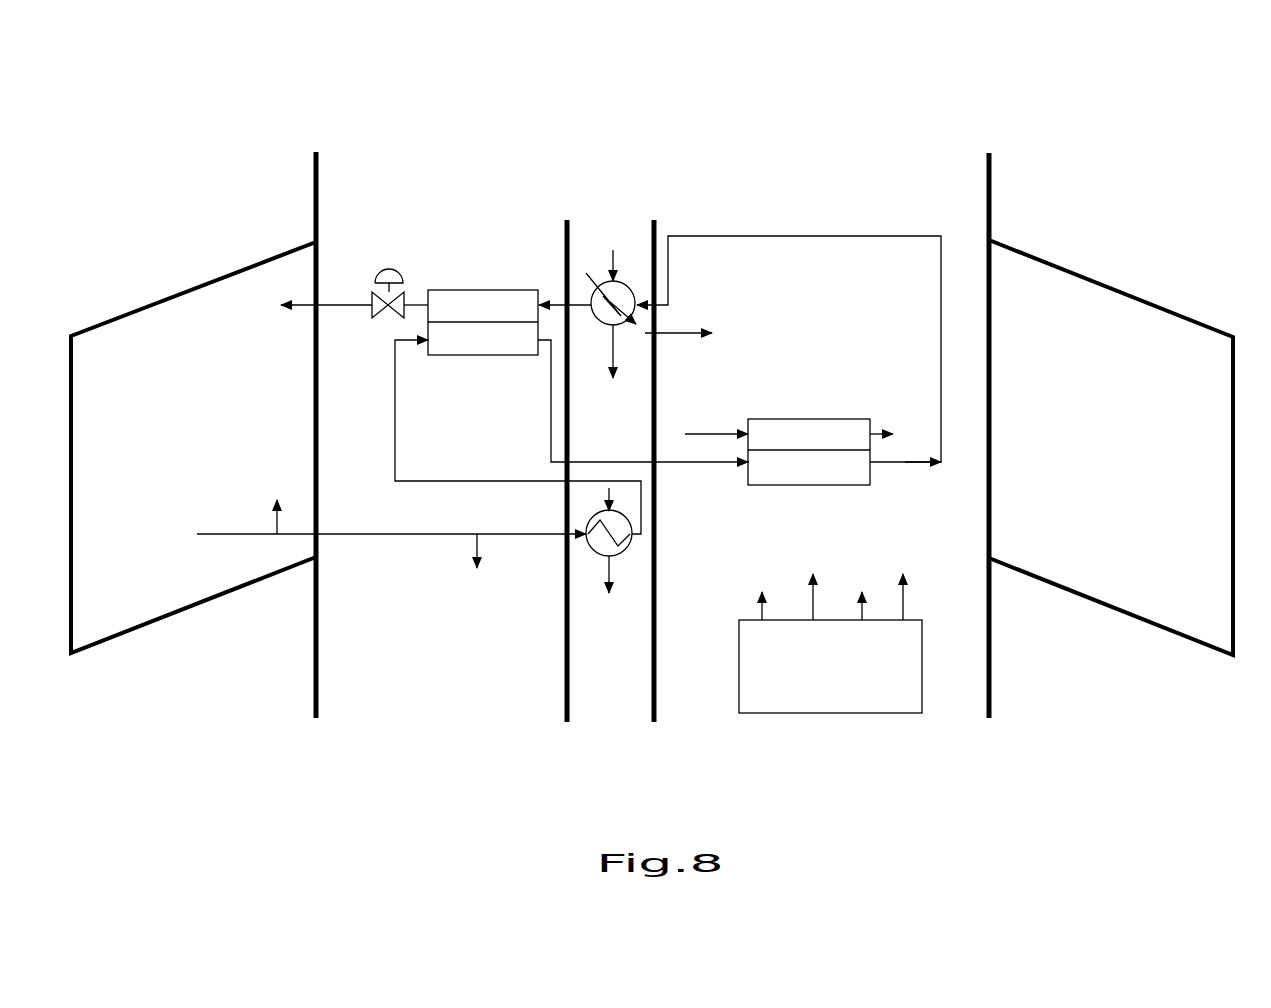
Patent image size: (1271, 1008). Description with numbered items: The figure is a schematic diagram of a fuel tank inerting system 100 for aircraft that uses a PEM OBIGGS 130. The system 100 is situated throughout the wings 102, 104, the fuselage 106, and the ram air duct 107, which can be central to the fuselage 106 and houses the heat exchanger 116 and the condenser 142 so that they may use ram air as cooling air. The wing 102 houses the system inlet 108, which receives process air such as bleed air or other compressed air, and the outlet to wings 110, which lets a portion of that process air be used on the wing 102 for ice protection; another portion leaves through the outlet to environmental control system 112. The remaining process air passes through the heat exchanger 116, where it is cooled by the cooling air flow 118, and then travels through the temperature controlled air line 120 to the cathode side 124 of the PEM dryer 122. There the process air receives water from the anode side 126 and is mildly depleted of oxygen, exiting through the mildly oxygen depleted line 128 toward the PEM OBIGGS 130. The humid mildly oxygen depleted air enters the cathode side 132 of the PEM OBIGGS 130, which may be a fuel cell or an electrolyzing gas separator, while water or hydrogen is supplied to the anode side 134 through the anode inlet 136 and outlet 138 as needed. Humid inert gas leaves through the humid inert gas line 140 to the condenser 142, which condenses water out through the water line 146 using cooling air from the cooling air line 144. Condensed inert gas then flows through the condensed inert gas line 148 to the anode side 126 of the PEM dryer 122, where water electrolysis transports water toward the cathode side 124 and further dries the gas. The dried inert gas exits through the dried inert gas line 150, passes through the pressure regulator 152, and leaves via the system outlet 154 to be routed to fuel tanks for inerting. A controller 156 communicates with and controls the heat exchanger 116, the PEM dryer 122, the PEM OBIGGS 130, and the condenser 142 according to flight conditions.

The fuel tank inerting system 100 is at (940, 126).
The wing 102 is at (108, 371).
The wing 104 is at (1060, 386).
The fuselage 106 is at (368, 189).
The ram air duct 107 is at (578, 696).
The system inlet 108 is at (242, 533).
The outlet to wings 110 is at (282, 524).
The outlet to environmental control system 112 is at (480, 548).
The heat exchanger 116 is at (636, 572).
The cooling air flow 118 is at (606, 497).
The temperature controlled air line 120 is at (445, 480).
The PEM dryer 122 is at (474, 282).
The cathode side 124 is at (463, 351).
The anode side 126 is at (463, 319).
The mildly oxygen depleted line 128 is at (549, 392).
The PEM OBIGGS 130 is at (814, 398).
The cathode side 132 is at (789, 481).
The anode side 134 is at (789, 448).
The anode inlet 136 is at (715, 416).
The anode outlet 138 is at (905, 433).
The humid inert gas line 140 is at (846, 236).
The condenser 142 is at (592, 260).
The cooling air line 144 is at (611, 273).
The water line 146 is at (672, 338).
The condensed inert gas line 148 is at (560, 300).
The dried inert gas line 150 is at (416, 300).
The pressure regulator 152 is at (378, 262).
The system outlet 154 is at (336, 312).
The controller 156 is at (808, 676).